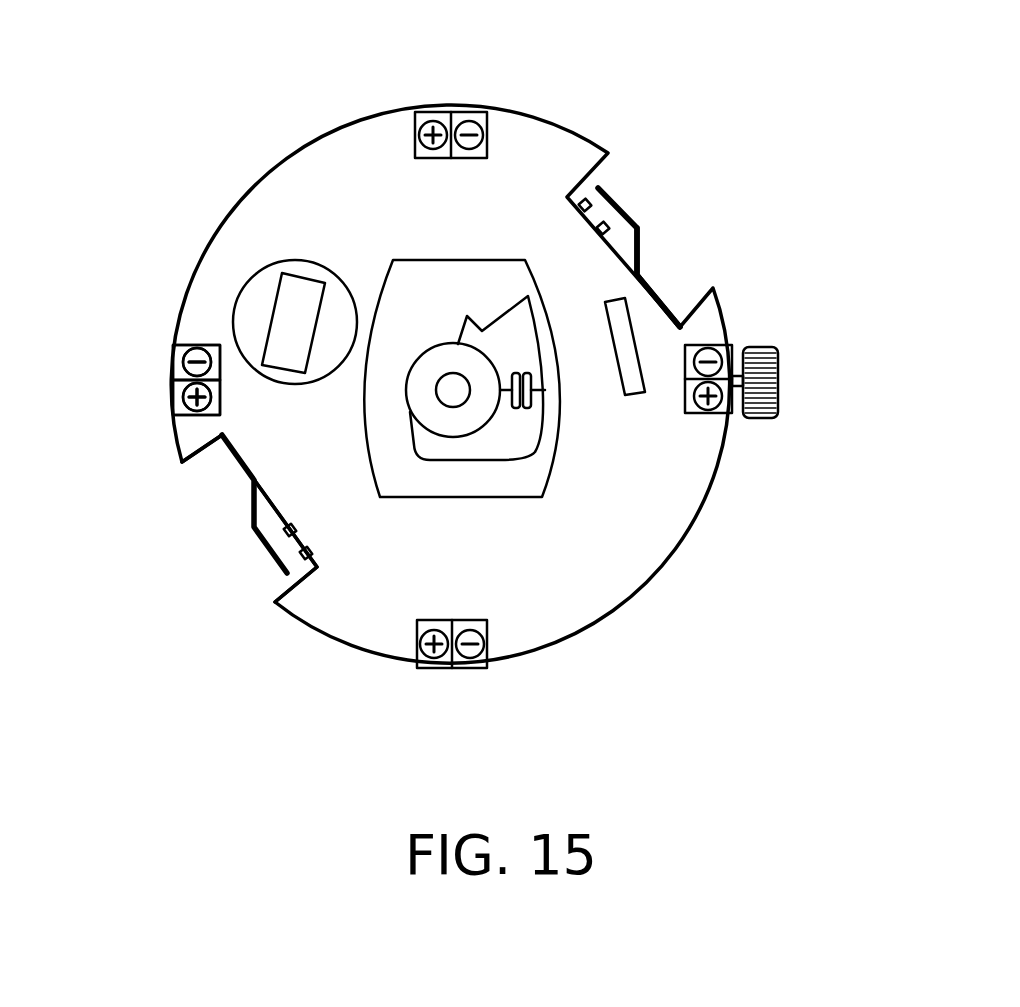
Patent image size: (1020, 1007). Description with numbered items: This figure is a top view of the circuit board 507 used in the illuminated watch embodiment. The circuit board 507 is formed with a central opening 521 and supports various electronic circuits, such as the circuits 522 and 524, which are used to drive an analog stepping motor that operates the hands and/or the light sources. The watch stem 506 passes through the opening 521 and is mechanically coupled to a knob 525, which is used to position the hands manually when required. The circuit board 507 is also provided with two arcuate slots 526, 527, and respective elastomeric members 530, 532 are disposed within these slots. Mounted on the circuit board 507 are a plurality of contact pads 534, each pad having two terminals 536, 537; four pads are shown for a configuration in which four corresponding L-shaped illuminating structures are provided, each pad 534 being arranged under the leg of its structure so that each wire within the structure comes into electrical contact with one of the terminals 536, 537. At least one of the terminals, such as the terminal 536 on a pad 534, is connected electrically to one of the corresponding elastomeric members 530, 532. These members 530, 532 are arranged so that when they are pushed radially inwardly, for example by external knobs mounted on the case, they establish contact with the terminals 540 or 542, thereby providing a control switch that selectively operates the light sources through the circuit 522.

The stem 506 is at (455, 383).
The circuit board 507 is at (620, 597).
The central opening 521 is at (418, 285).
The electronic circuit 522 is at (257, 293).
The electronic circuit 524 is at (627, 375).
The knob 525 is at (763, 347).
The arcuate slot 526 is at (635, 208).
The arcuate slot 527 is at (250, 560).
The elastomeric member 530 is at (637, 227).
The elastomeric member 532 is at (232, 463).
The contact pad 534 is at (450, 100).
The terminal 536 is at (177, 358).
The terminal 537 is at (175, 420).
The terminal 540 is at (583, 210).
The terminal 542 is at (297, 533).